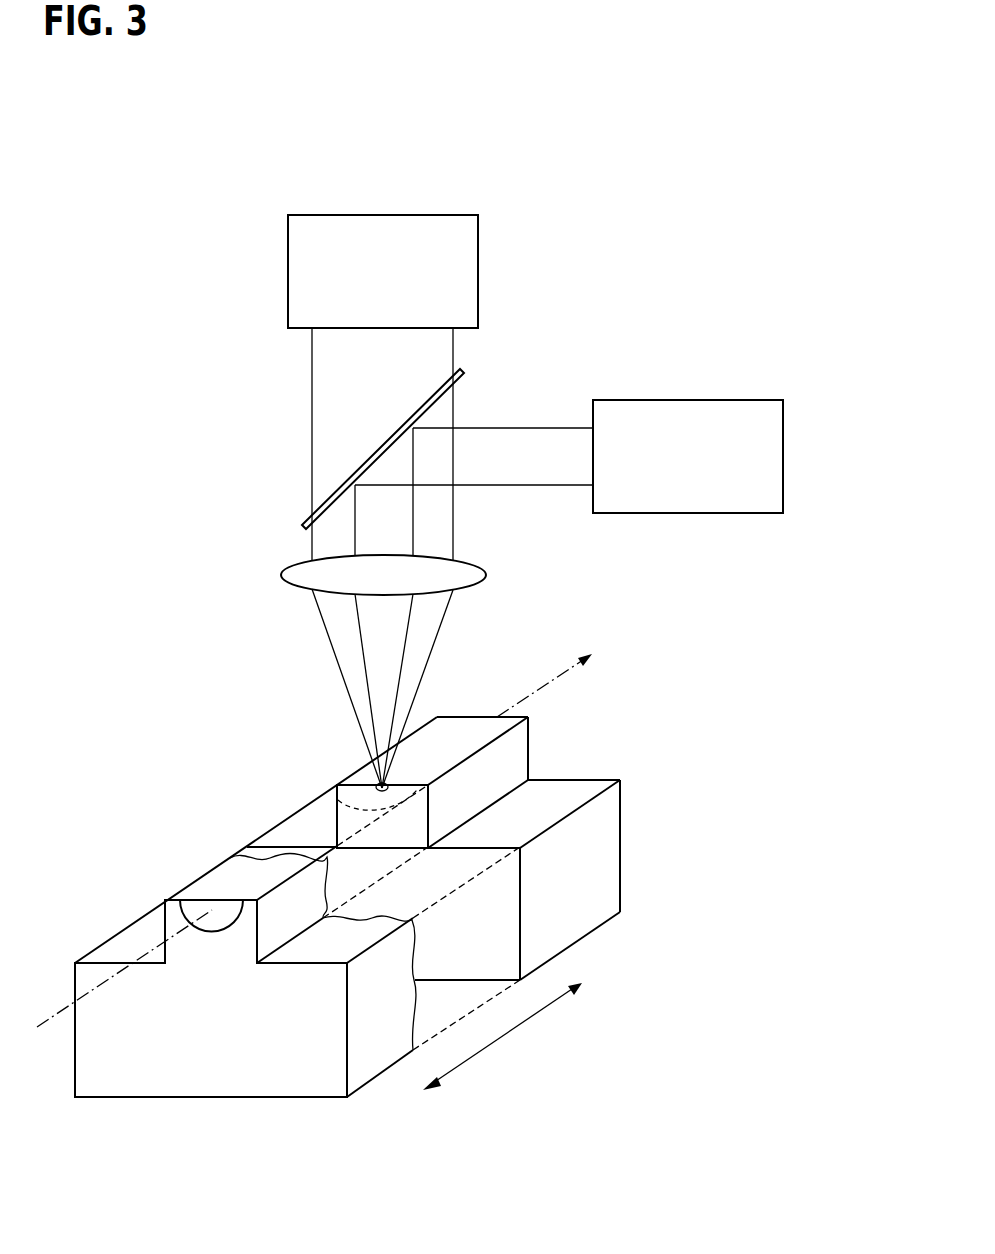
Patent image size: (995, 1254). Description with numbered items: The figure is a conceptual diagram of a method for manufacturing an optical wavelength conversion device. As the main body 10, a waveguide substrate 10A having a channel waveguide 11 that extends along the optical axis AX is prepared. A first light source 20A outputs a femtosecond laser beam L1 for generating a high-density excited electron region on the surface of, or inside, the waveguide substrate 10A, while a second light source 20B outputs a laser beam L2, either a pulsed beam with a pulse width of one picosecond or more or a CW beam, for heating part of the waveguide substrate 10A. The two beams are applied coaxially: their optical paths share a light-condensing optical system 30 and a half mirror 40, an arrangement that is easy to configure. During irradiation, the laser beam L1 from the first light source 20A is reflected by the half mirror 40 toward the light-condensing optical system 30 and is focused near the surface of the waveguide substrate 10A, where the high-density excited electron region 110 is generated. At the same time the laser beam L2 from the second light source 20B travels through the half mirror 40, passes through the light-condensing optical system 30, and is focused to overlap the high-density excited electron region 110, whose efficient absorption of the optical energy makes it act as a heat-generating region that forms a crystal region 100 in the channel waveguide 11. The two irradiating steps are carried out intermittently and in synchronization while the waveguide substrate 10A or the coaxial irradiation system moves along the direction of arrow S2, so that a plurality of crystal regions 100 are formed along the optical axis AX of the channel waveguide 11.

The second light source 20B is at (478, 250).
The first light source 20A is at (690, 400).
The laser beam L2 is at (463, 364).
The laser beam L1 is at (521, 502).
The half mirror 40 is at (303, 523).
The light-condensing optical system 30 is at (282, 574).
The waveguide substrate 10A is at (632, 816).
The main body 10 is at (423, 907).
The channel waveguide 11 is at (178, 912).
The optical axis AX is at (324, 831).
The high-density excited electron region 110 is at (376, 783).
The crystal region 100 is at (340, 800).
The arrow S2 is at (502, 1043).